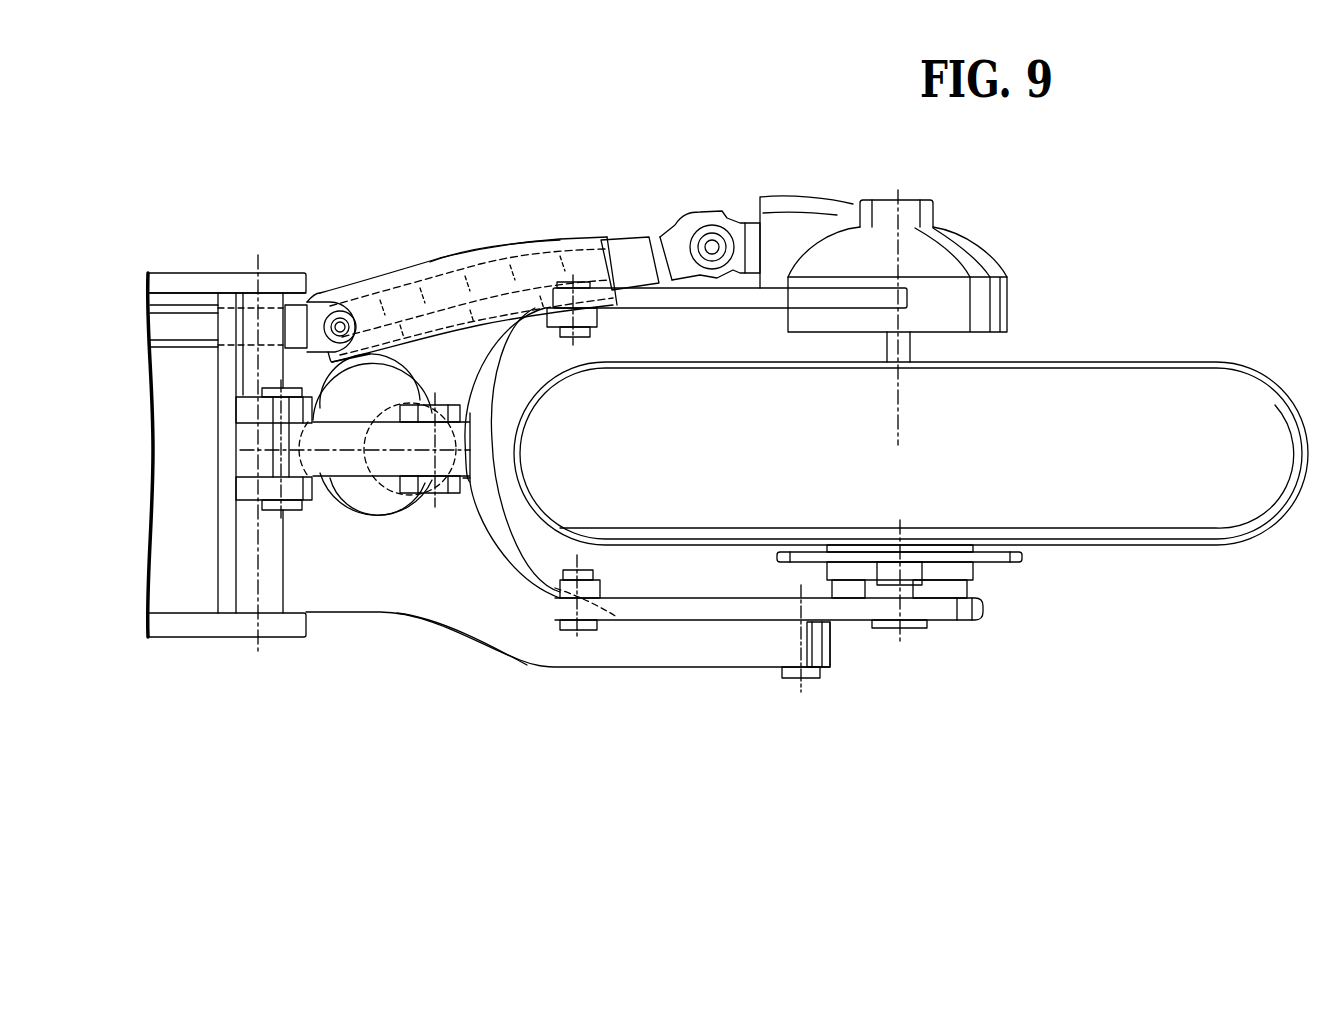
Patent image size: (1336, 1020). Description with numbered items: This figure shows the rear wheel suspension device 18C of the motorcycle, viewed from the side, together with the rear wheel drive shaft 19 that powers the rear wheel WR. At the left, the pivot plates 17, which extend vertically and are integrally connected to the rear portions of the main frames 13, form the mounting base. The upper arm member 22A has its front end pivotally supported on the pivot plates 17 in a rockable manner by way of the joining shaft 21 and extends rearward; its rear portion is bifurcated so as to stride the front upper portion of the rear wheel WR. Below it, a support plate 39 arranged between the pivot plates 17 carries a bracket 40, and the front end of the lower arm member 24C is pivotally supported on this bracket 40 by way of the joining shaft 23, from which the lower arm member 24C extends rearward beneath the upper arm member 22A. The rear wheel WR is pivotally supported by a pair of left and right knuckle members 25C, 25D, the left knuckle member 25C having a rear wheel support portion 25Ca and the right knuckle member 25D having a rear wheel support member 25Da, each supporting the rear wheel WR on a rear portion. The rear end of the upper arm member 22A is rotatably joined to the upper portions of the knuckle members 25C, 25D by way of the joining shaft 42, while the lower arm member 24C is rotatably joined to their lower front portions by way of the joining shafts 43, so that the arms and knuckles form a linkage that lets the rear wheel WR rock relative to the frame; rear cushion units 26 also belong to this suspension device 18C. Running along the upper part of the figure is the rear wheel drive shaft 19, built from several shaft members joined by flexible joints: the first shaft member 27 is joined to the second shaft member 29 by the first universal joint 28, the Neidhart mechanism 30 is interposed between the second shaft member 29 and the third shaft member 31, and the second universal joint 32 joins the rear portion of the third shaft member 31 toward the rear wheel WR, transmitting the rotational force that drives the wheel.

The main frame 13 is at (160, 283).
The rear wheel drive shaft 19 is at (190, 308).
The bracket 40 is at (243, 322).
The pivot plate 17 is at (283, 280).
The first universal joint 28 is at (340, 296).
The second shaft member 29 is at (397, 285).
The Neidhart mechanism 30 is at (509, 266).
The third shaft member 31 is at (625, 262).
The knuckle member 25C is at (645, 275).
The joining shaft 43 is at (587, 333).
The second universal joint 32 is at (702, 296).
The rear wheel support portion 25Ca is at (950, 317).
The rear wheel WR is at (1150, 385).
The first shaft member 27 is at (190, 350).
The support plate 39 is at (220, 490).
The joining shaft 23 is at (273, 512).
The lower arm member 24C is at (343, 460).
The rear cushion unit 26 is at (380, 527).
The upper arm member 22A is at (445, 608).
The rear wheel suspension device 18C is at (520, 662).
The knuckle member 25D is at (660, 610).
The joining shaft 42 is at (788, 680).
The rear wheel support member 25Da is at (985, 613).
The joining shaft 21 is at (250, 607).